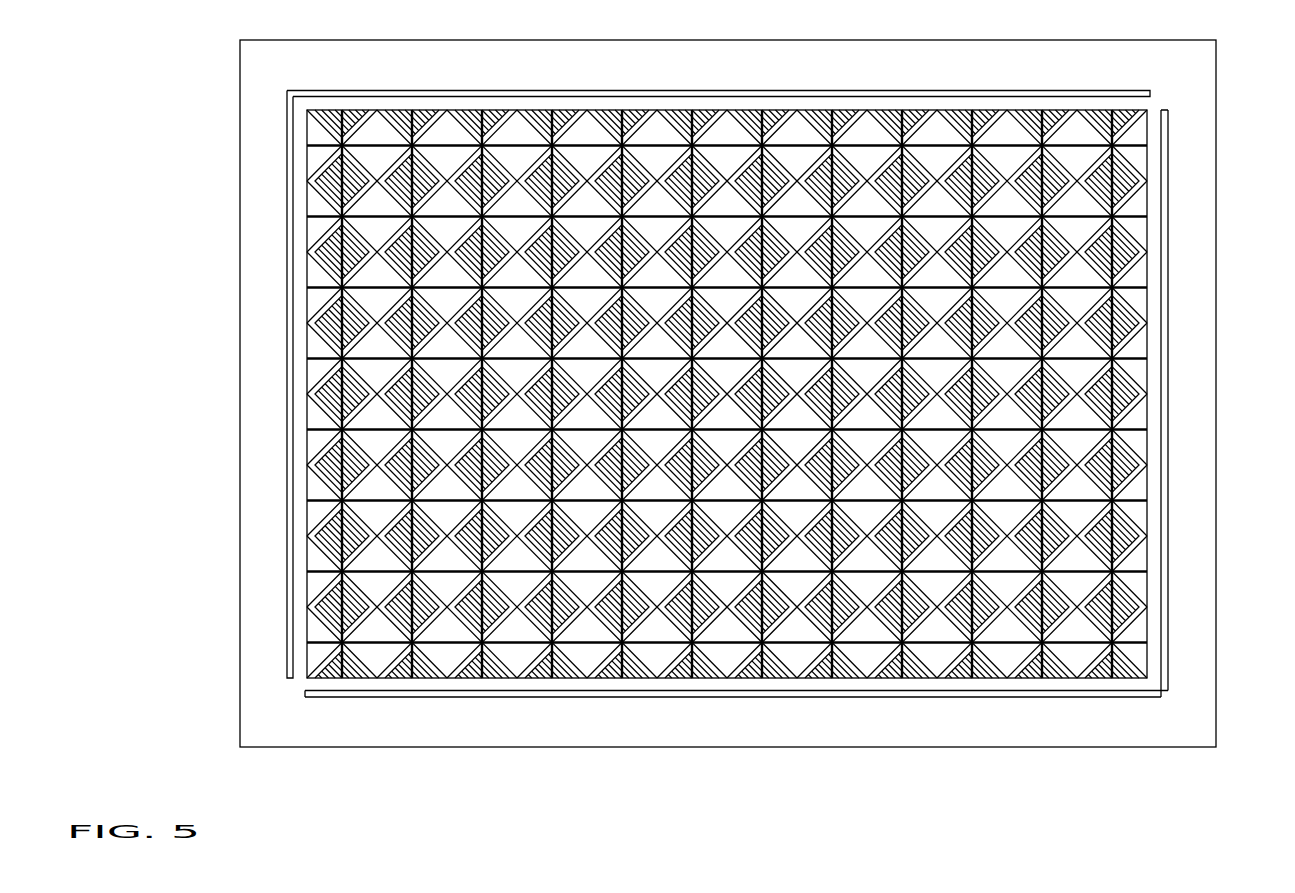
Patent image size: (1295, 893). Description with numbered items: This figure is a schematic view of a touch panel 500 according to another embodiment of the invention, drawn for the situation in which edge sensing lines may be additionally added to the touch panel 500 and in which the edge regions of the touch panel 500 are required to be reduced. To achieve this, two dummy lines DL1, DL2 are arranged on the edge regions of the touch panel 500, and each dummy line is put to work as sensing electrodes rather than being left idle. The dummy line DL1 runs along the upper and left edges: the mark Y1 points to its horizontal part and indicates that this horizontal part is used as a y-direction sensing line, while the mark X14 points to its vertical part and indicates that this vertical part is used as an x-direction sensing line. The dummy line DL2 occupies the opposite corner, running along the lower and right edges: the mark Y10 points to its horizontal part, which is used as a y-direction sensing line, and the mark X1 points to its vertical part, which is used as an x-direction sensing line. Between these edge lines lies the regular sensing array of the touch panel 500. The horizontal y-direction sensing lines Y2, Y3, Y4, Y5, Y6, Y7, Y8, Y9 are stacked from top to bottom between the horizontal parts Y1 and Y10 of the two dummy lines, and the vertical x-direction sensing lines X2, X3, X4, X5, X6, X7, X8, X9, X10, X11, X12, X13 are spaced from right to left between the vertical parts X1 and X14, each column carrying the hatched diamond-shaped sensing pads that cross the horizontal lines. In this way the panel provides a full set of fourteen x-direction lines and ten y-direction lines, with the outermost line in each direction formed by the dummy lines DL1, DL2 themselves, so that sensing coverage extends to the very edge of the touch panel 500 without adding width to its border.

The touch panel 500 is at (1284, 790).
The x-direction sensing line X1 is at (1164, 700).
The x-direction sensing line X2 is at (1120, 679).
The x-direction sensing line X3 is at (1050, 679).
The x-direction sensing line X4 is at (980, 679).
The x-direction sensing line X5 is at (910, 679).
The x-direction sensing line X6 is at (840, 679).
The x-direction sensing line X7 is at (770, 679).
The x-direction sensing line X8 is at (700, 679).
The x-direction sensing line X9 is at (630, 679).
The x-direction sensing line X10 is at (560, 679).
The x-direction sensing line X11 is at (490, 679).
The x-direction sensing line X12 is at (420, 679).
The x-direction sensing line X13 is at (350, 679).
The x-direction sensing line X14 is at (290, 688).
The y-direction sensing line Y1 is at (288, 93).
The y-direction sensing line Y2 is at (313, 144).
The y-direction sensing line Y3 is at (313, 216).
The y-direction sensing line Y4 is at (313, 286).
The y-direction sensing line Y5 is at (313, 358).
The y-direction sensing line Y6 is at (313, 428).
The y-direction sensing line Y7 is at (313, 500).
The y-direction sensing line Y8 is at (313, 570).
The y-direction sensing line Y9 is at (313, 642).
The y-direction sensing line Y10 is at (295, 693).
The dummy line DL1 is at (762, 406).
The dummy line DL2 is at (762, 423).